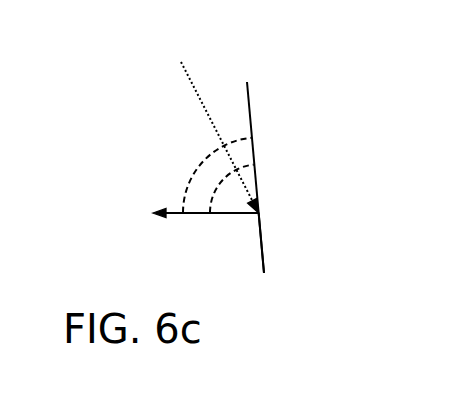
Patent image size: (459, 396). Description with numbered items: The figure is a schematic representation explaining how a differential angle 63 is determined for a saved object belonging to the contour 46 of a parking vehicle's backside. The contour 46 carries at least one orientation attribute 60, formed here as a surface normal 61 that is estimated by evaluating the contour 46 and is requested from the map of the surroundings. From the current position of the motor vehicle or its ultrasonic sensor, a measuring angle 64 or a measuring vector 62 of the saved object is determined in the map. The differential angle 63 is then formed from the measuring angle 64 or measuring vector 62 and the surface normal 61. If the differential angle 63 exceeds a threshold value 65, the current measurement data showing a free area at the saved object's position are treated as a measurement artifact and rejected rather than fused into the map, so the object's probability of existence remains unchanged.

The contour 46 is at (262, 245).
The orientation attribute 60 is at (205, 253).
The surface normal 61 is at (223, 213).
The measuring vector 62 is at (250, 118).
The differential angle 63 is at (207, 158).
The measuring angle 64 is at (214, 194).
The threshold value 65 is at (190, 79).